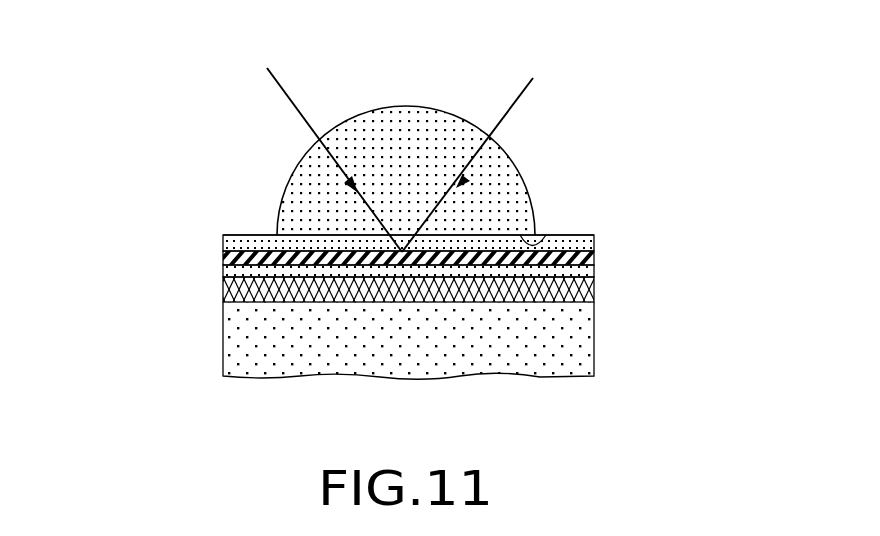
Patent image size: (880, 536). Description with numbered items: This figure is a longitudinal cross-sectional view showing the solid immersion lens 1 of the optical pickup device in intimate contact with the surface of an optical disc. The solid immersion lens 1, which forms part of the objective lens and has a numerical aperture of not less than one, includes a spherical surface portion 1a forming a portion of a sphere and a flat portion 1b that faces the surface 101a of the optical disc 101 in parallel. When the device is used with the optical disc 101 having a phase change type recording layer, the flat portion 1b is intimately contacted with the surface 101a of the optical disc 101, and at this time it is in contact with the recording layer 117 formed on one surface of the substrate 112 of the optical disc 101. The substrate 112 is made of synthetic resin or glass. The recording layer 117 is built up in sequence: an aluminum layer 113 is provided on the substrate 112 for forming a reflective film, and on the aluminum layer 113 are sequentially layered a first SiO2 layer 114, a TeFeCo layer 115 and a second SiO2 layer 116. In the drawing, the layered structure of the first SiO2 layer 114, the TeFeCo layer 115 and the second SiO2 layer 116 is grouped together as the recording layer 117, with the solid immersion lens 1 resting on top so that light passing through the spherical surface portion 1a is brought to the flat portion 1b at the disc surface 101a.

The solid immersion lens 1 is at (437, 139).
The spherical surface portion 1a is at (518, 165).
The flat portion 1b is at (542, 236).
The optical disc 101 is at (375, 318).
The surface of optical disc 101a is at (581, 235).
The substrate 112 is at (222, 358).
The aluminum layer 113 is at (220, 292).
The first SiO2 layer 114 is at (363, 284).
The TeFeCo layer 115 is at (222, 258).
The second SiO2 layer 116 is at (222, 242).
The recording layer 117 is at (325, 250).